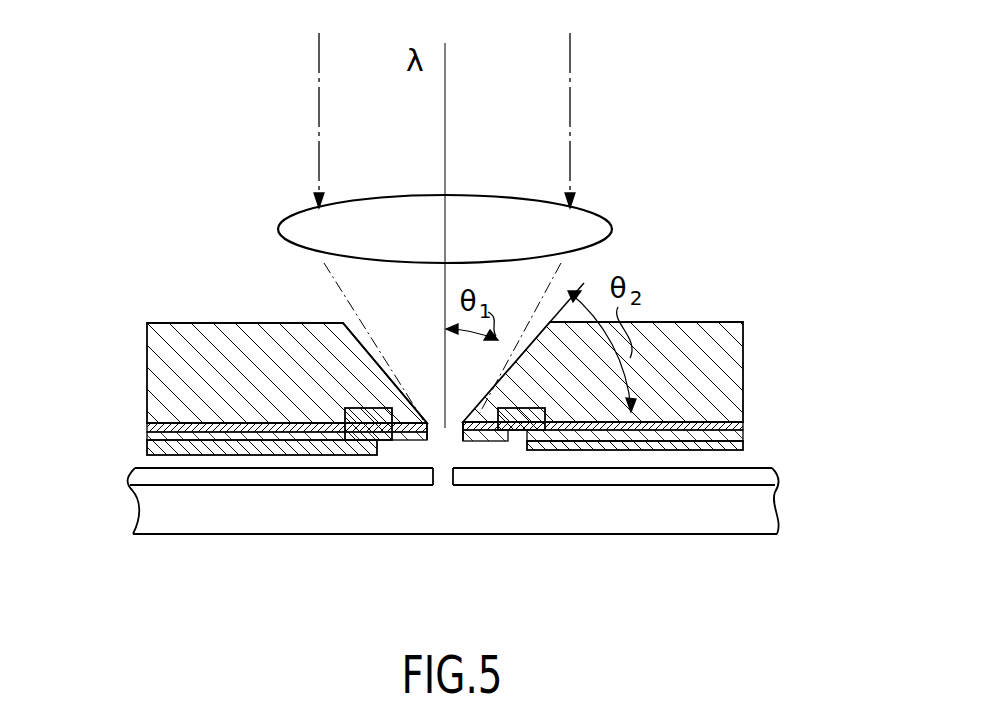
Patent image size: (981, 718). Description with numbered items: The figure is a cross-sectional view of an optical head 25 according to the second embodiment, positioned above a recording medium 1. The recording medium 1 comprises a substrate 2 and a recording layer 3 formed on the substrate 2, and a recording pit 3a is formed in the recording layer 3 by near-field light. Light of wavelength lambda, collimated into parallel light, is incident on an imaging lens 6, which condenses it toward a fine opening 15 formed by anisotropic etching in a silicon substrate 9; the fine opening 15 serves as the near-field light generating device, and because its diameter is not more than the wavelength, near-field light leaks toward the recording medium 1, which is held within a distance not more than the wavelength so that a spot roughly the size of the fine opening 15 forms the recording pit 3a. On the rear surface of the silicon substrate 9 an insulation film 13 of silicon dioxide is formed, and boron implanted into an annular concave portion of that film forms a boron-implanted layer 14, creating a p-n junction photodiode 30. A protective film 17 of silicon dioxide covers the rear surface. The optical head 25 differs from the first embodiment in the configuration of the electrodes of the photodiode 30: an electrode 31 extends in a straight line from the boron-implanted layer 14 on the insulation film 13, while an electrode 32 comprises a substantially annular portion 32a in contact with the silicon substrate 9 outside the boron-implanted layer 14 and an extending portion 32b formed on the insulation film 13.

The recording medium 1 is at (616, 552).
The substrate 2 is at (778, 515).
The recording layer 3 is at (772, 470).
The recording pit 3a is at (448, 477).
The imaging lens 6 is at (612, 222).
The silicon substrate 9 is at (147, 327).
The insulation film 13 is at (147, 426).
The boron-implanted layer 14 is at (358, 388).
The fine opening 15 is at (440, 438).
The protective film 17 is at (735, 440).
The optical head 25 is at (682, 265).
The photodiode 30 is at (357, 420).
The electrode 31 is at (147, 447).
The electrode 32 is at (745, 428).
The annular portion 32a is at (562, 430).
The extending portion 32b is at (665, 440).